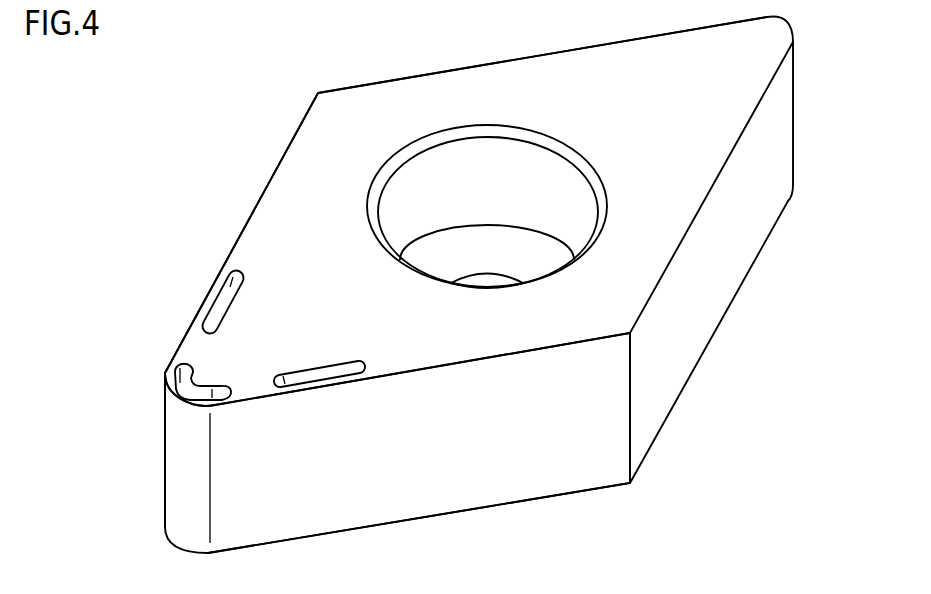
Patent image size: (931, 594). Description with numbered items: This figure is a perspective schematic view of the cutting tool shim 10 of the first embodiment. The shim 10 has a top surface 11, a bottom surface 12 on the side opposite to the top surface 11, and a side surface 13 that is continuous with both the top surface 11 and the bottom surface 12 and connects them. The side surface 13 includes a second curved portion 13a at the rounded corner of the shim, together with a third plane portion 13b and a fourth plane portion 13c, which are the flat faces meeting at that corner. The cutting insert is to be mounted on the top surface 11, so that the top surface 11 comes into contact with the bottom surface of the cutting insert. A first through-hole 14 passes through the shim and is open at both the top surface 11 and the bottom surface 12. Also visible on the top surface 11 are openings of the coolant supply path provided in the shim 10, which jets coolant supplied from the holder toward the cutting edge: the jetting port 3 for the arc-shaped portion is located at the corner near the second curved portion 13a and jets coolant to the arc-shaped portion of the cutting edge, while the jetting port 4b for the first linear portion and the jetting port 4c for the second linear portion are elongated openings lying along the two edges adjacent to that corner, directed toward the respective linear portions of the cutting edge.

The shim 10 is at (270, 79).
The top surface 11 is at (285, 197).
The bottom surface 12 is at (543, 496).
The side surface 13 is at (104, 336).
The second curved portion 13a is at (187, 428).
The third plane portion 13b is at (263, 450).
The fourth plane portion 13c is at (180, 336).
The first through-hole 14 is at (472, 175).
The jetting port for arc-shaped portion 3 is at (226, 392).
The jetting port for first linear portion 4b is at (328, 384).
The jetting port for second linear portion 4c is at (210, 290).